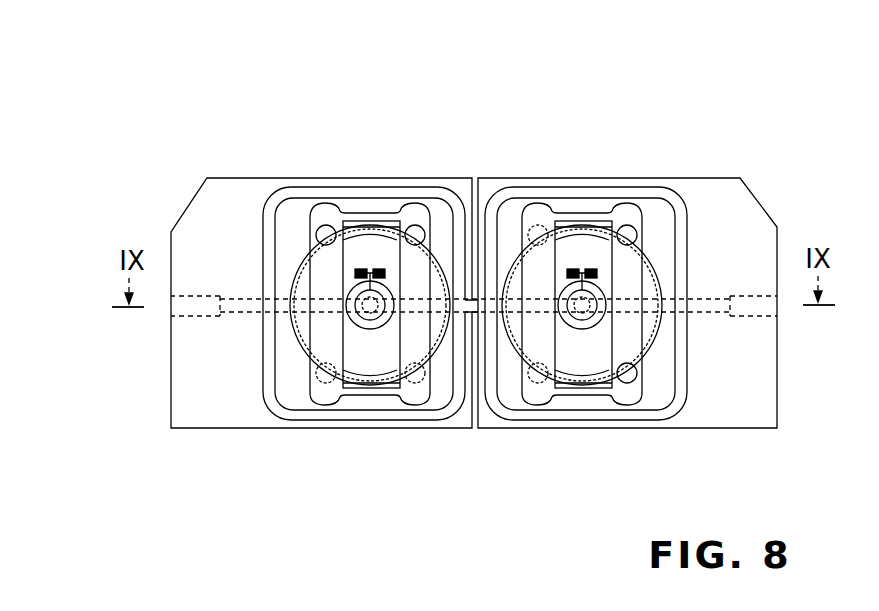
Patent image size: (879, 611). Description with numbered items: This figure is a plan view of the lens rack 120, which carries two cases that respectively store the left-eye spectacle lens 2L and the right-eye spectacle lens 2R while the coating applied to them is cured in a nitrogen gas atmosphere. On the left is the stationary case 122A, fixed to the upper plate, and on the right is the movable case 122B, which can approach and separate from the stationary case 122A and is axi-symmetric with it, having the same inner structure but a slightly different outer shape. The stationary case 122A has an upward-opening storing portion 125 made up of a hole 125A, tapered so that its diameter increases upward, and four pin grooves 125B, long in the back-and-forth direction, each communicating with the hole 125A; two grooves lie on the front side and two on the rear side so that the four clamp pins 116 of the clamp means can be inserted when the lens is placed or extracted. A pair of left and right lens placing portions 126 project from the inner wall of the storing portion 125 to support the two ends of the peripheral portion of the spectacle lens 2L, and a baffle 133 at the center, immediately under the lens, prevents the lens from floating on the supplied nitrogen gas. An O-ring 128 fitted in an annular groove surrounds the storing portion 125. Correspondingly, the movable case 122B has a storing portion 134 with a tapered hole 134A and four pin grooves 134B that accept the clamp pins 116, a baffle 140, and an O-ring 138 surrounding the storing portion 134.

The lens rack 120 is at (464, 26).
The stationary case 122A is at (229, 171).
The movable case 122B is at (721, 171).
The storing portion 125 is at (465, 94).
The hole 125A is at (363, 248).
The pin grooves 125B is at (323, 212).
The O-ring 128 is at (288, 190).
The storing portion 134 is at (660, 94).
The tapered hole 134A is at (572, 248).
The pin grooves 134B is at (538, 213).
The O-ring 138 is at (670, 398).
The clamp pins 116 is at (318, 237).
The lens placing portions 126 is at (305, 327).
The baffle 133 is at (370, 329).
The baffle 140 is at (585, 329).
The left-eye spectacle lens 2L is at (332, 395).
The right-eye spectacle lens 2R is at (523, 393).